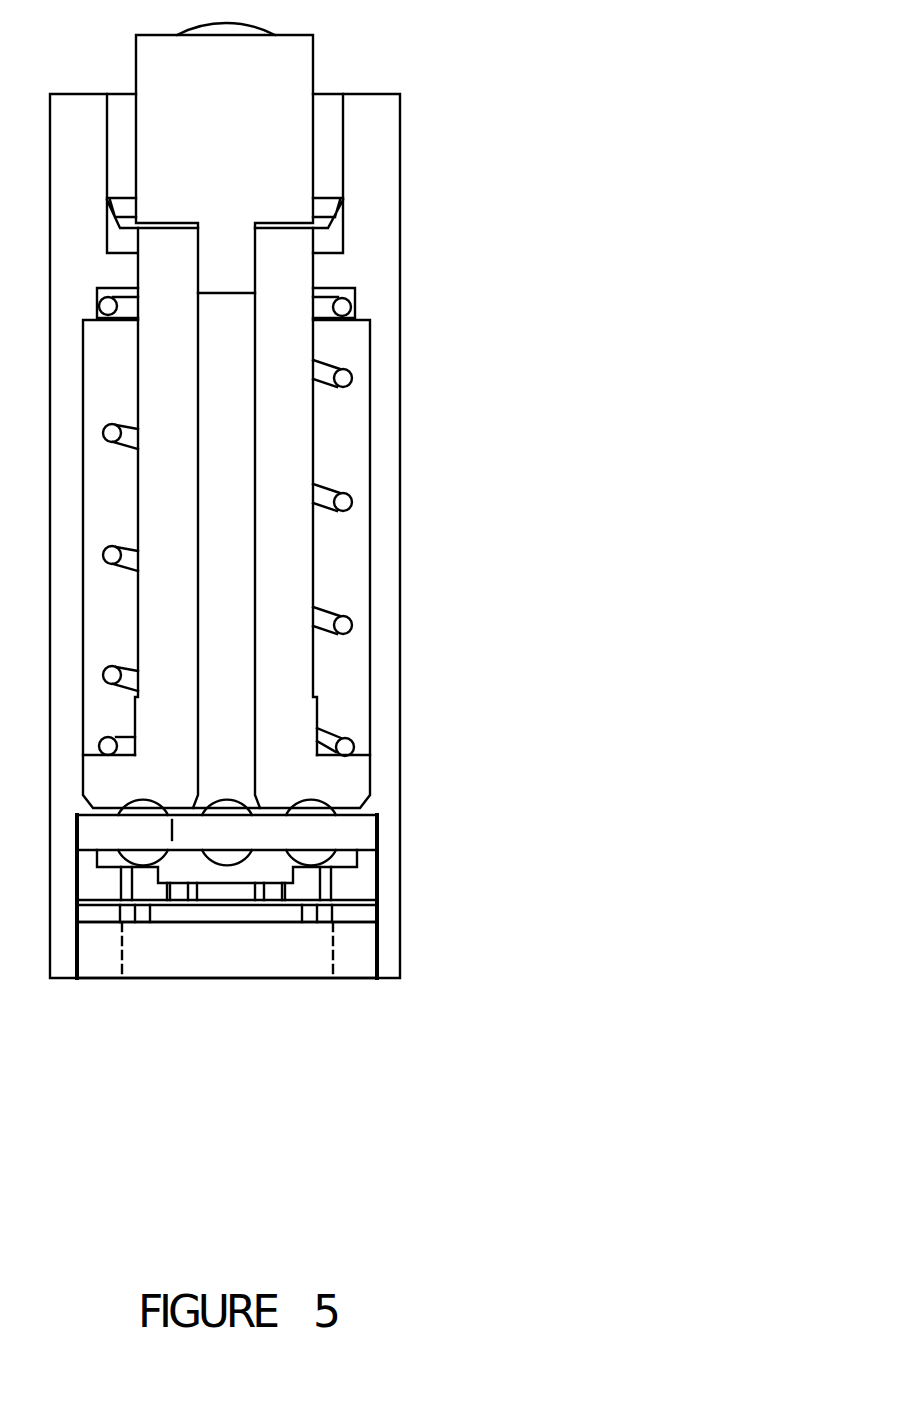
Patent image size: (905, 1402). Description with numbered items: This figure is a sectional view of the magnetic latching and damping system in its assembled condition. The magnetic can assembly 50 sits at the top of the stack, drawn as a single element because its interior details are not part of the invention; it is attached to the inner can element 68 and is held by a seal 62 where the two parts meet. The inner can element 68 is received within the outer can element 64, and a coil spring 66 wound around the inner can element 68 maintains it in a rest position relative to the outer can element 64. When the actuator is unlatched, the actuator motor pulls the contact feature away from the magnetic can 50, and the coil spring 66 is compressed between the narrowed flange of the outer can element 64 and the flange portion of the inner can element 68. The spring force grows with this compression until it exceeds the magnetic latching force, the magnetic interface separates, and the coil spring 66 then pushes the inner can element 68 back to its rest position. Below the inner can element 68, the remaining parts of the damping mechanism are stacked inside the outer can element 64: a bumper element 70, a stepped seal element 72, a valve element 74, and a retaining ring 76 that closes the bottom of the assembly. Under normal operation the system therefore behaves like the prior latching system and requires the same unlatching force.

The magnetic can assembly 50 is at (237, 145).
The seal 62 is at (340, 208).
The outer can element 64 is at (388, 702).
The coil spring 66 is at (343, 380).
The inner can element 68 is at (295, 547).
The bumper element 70 is at (343, 833).
The stepped seal element 72 is at (345, 881).
The valve element 74 is at (365, 917).
The retaining ring 76 is at (358, 964).